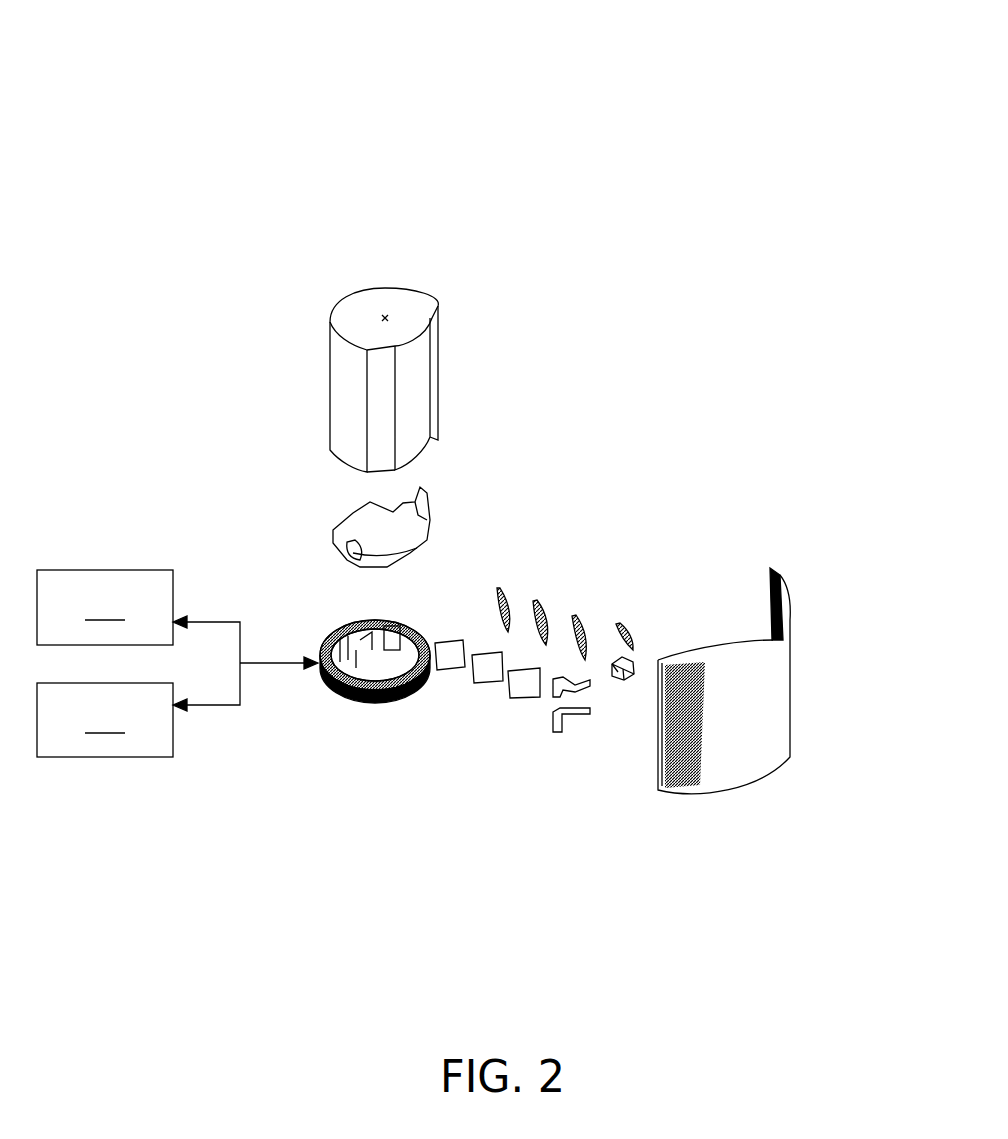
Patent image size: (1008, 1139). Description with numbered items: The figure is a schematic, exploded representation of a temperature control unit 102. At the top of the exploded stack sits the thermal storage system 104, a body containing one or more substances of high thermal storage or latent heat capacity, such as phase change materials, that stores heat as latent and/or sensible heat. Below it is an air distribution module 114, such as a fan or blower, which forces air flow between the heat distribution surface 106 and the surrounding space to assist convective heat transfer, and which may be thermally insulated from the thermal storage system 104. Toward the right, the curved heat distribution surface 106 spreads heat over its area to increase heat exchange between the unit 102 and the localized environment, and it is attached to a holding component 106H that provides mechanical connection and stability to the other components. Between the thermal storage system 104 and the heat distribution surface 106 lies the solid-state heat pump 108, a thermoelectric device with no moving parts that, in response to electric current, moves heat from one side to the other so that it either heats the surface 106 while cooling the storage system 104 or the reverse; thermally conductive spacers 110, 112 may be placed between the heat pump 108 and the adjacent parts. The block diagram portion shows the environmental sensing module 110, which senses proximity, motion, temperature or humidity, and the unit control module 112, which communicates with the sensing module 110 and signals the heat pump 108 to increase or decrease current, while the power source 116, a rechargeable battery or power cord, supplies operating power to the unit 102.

The temperature control unit 102 is at (783, 79).
The thermal storage system 104 is at (295, 394).
The heat distribution surface 106 is at (778, 590).
The holding component 106H is at (625, 601).
The solid-state heat pump 108 is at (547, 576).
The environmental sensing module 110 is at (509, 566).
The unit control module 112 is at (592, 574).
The air distribution module 114 is at (355, 522).
The power source 116 is at (372, 722).